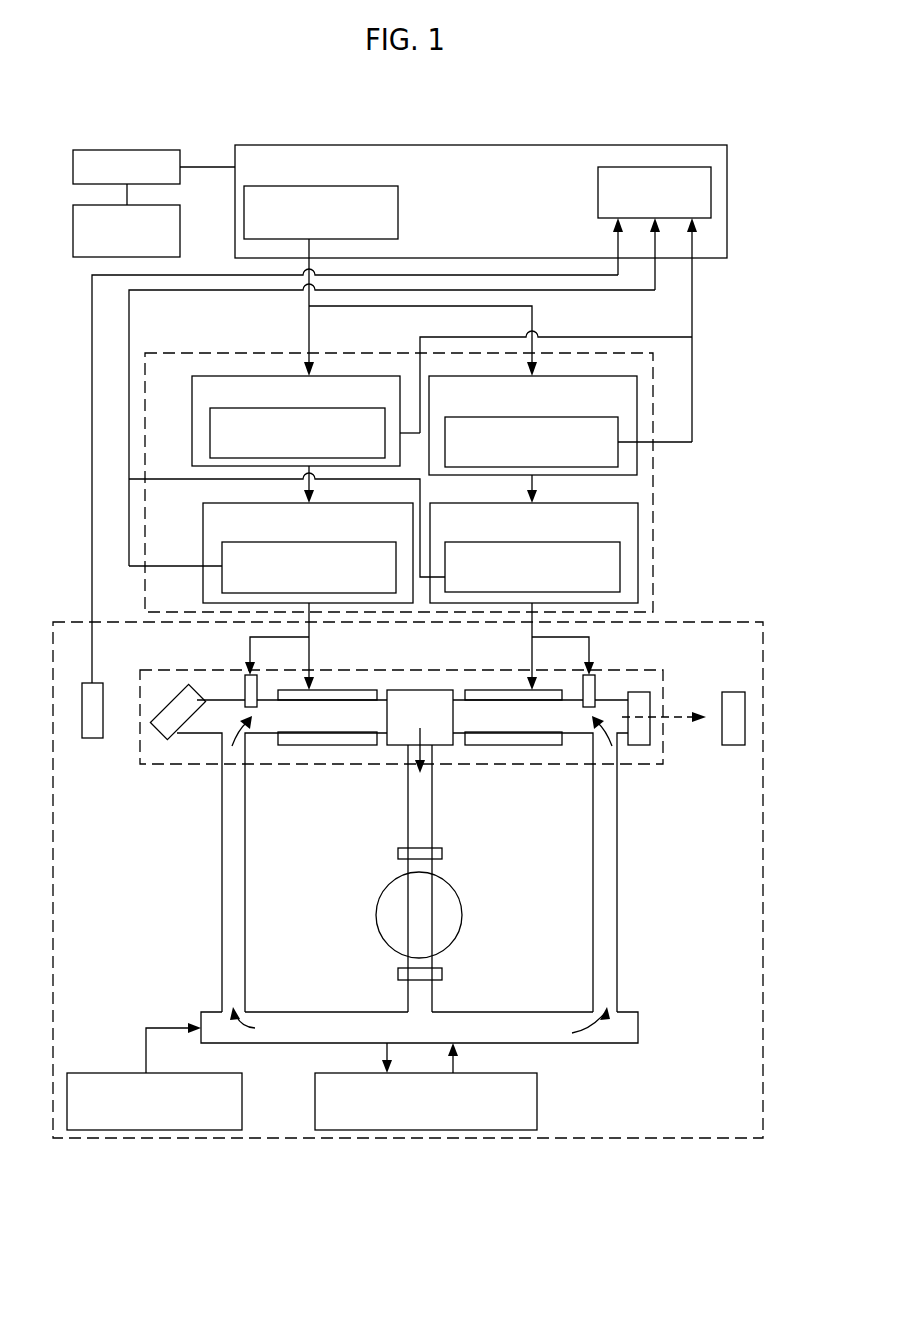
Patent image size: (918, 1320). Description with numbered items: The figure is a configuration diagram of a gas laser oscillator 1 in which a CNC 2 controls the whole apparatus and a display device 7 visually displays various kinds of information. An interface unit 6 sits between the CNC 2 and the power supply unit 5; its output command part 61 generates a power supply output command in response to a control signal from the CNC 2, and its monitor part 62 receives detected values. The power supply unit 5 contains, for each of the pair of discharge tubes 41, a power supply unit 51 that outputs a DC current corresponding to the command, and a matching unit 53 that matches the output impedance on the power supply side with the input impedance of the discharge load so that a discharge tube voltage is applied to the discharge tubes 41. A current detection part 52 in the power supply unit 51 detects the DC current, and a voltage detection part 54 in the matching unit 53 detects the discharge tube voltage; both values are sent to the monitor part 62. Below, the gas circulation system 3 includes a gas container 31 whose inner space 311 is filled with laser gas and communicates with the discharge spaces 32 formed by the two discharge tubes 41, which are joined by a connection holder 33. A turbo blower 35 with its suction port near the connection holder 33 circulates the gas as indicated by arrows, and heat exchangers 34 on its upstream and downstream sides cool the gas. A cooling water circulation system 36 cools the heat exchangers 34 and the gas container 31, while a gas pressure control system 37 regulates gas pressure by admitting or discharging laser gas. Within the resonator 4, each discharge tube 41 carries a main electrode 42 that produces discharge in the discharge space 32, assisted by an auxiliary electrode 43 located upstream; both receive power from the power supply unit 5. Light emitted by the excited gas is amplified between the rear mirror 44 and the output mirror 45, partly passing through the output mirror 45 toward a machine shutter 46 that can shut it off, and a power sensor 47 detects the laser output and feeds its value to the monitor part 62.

The gas laser oscillator 1 is at (86, 126).
The CNC 2 is at (160, 150).
The display device 7 is at (73, 222).
The interface unit 6 is at (607, 145).
The output command part 61 is at (398, 213).
The monitor part 62 is at (695, 167).
The power supply unit 5 is at (245, 350).
The power supply unit 51 is at (270, 376).
The current detection part 52 is at (210, 433).
The matching unit 53 is at (203, 545).
The voltage detection part 54 is at (222, 583).
The gas circulation system 3 is at (693, 615).
The resonator 4 is at (190, 768).
The gas container 31 is at (617, 870).
The inner space 311 is at (594, 912).
The discharge space 32 is at (305, 733).
The connection holder 33 is at (420, 690).
The heat exchanger 34 is at (398, 853).
The turbo blower 35 is at (462, 915).
The cooling water circulation system 36 is at (537, 1097).
The gas pressure control system 37 is at (242, 1098).
The discharge tube 41 is at (337, 748).
The main electrode 42 is at (340, 690).
The auxiliary electrode 43 is at (245, 690).
The rear mirror 44 is at (152, 718).
The output mirror 45 is at (650, 705).
The machine shutter 46 is at (735, 692).
The power sensor 47 is at (95, 738).